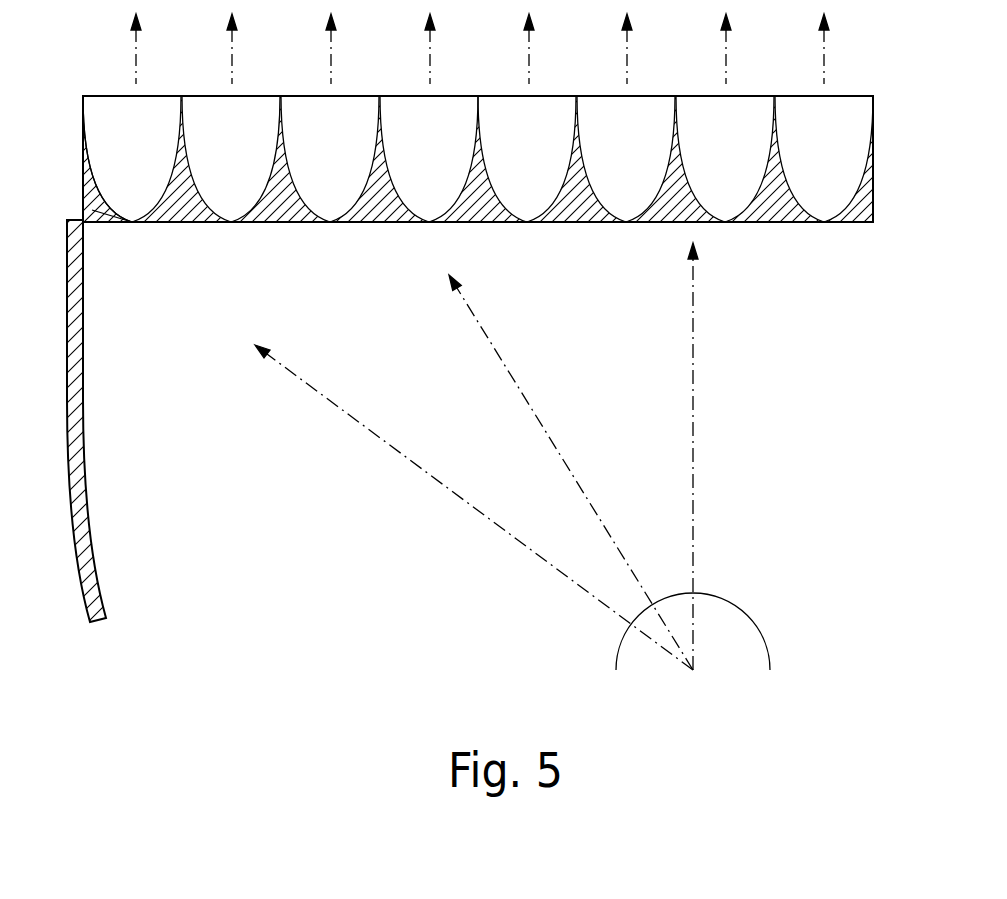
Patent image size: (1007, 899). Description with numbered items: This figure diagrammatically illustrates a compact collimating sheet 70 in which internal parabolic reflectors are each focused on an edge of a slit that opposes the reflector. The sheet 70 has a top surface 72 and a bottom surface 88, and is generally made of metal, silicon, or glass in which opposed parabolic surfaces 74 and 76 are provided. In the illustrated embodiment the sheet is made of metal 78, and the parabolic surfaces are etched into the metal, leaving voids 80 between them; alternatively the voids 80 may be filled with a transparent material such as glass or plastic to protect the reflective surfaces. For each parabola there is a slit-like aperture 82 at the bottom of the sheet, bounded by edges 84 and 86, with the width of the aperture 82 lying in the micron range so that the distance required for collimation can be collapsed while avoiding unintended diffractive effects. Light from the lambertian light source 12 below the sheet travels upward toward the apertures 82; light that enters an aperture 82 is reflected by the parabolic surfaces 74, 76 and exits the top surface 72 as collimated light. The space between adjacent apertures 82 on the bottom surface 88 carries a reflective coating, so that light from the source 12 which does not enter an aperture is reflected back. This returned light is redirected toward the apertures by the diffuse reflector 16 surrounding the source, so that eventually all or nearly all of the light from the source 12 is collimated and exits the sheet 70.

The lambertian light source 12 is at (720, 598).
The diffuse reflector 16 is at (86, 352).
The collimating sheet 70 is at (547, 95).
The top surface 72 is at (632, 97).
The parabolic surface 74 is at (88, 152).
The parabolic surface 76 is at (170, 158).
The metal 78 is at (82, 203).
The voids 80 is at (152, 130).
The slit-like aperture 82 is at (136, 240).
The edge 84 is at (130, 220).
The edge 86 is at (133, 224).
The bottom surface with reflective coating 88 is at (108, 224).